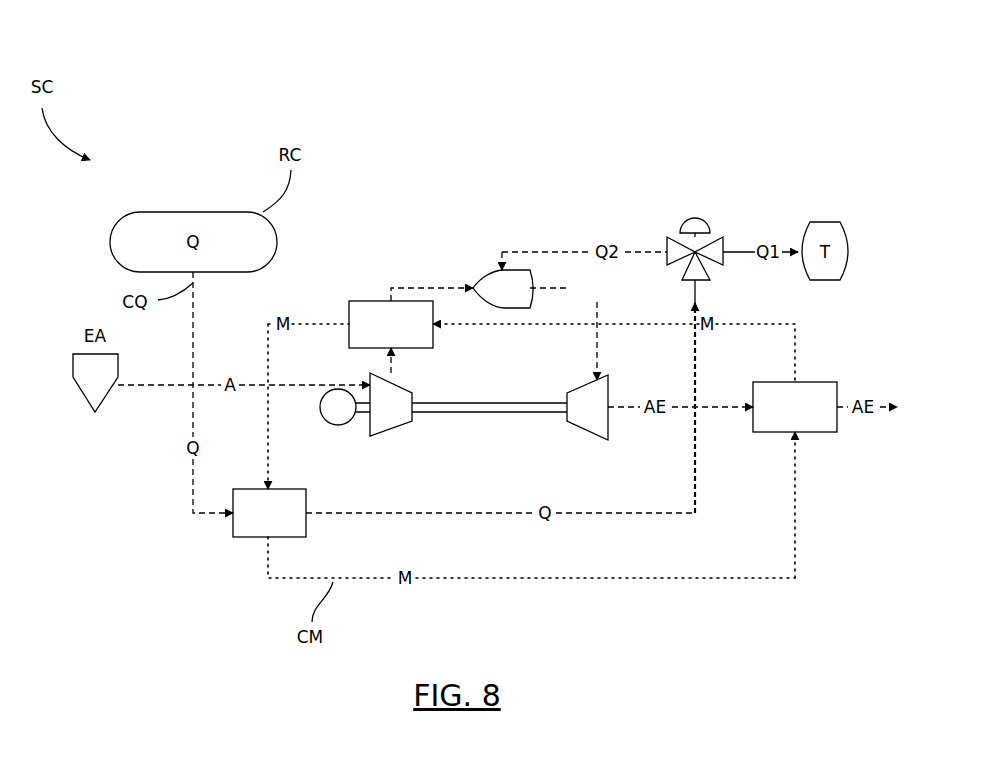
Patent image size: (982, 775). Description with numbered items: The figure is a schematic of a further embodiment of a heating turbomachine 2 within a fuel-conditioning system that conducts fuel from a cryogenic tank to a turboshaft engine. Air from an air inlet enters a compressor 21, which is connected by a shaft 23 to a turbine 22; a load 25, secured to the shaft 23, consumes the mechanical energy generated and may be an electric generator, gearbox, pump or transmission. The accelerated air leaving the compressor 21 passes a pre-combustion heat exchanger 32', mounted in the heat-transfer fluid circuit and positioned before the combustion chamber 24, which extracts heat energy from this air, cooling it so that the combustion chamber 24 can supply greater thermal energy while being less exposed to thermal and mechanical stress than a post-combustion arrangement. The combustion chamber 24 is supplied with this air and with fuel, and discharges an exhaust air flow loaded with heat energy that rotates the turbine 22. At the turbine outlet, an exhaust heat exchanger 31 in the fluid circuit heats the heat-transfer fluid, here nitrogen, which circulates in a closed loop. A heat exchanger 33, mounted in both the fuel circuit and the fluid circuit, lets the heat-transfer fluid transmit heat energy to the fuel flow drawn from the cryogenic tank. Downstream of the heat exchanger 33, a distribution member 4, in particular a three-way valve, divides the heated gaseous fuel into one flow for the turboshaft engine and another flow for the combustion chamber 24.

The heating turbomachine 2 is at (403, 270).
The distribution member 4 is at (697, 222).
The compressor 21 is at (391, 404).
The turbine 22 is at (587, 407).
The shaft 23 is at (497, 413).
The combustion chamber 24 is at (503, 289).
The load 25 is at (338, 425).
The exhaust heat exchanger 31 is at (795, 407).
The pre-combustion heat exchanger 32' is at (391, 324).
The heat exchanger 33 is at (269, 513).